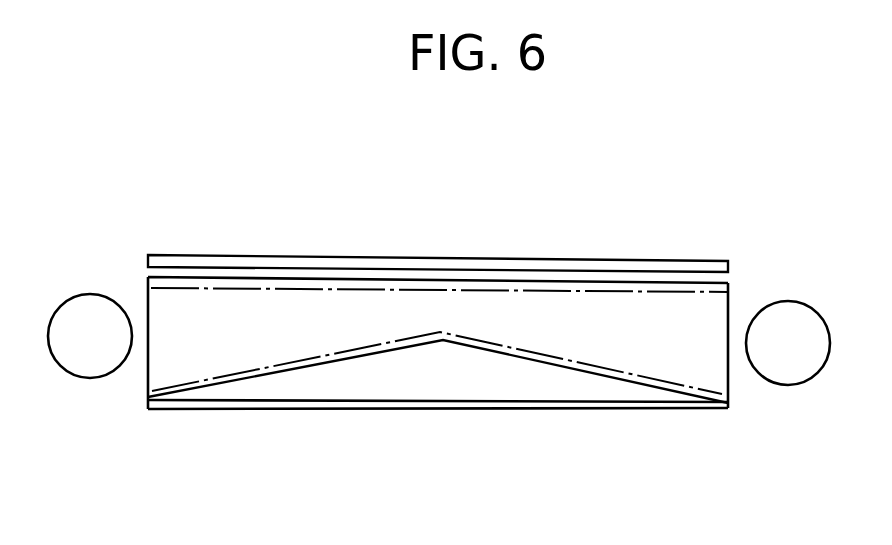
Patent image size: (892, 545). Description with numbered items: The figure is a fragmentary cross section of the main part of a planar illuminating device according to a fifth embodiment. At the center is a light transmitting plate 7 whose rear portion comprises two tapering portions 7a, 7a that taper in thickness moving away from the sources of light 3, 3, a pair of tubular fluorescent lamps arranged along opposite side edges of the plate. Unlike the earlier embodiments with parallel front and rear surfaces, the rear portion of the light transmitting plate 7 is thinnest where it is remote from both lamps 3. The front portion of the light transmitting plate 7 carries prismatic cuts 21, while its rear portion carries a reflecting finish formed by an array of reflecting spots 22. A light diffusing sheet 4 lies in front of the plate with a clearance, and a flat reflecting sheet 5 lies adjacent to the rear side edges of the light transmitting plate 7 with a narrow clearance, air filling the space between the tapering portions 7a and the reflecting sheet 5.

The tubular fluorescent lamp 3 is at (84, 366).
The light diffusing sheet 4 is at (570, 265).
The reflecting sheet 5 is at (422, 405).
The light transmitting plate 7 is at (717, 313).
The tapering portion 7a is at (343, 366).
The prismatic cuts 21 is at (328, 288).
The spot-shaped light reflecting layers 22 is at (242, 380).